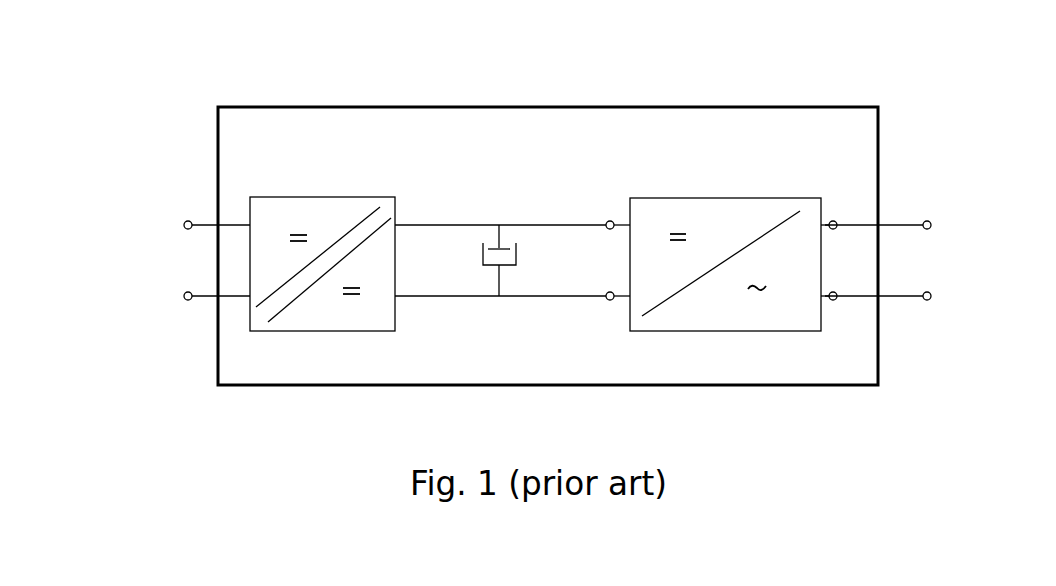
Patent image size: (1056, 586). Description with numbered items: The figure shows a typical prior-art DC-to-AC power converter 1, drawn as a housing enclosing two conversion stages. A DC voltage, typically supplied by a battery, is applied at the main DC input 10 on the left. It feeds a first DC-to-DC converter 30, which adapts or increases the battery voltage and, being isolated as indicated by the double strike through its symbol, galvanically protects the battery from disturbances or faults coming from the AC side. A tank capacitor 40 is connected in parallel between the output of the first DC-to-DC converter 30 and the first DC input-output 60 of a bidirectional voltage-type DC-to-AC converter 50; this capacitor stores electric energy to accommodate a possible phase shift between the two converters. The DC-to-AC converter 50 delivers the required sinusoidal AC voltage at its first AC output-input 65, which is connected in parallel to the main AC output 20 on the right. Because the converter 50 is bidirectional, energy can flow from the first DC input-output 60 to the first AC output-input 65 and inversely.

The DC-to-AC power converter 1 is at (275, 105).
The main DC input 10 is at (181, 232).
The main AC output 20 is at (1024, 257).
The first DC-to-DC converter 30 is at (347, 197).
The tank capacitor 40 is at (479, 260).
The DC-to-AC converter 50 is at (757, 198).
The first DC input-output 60 is at (604, 236).
The first AC output-input 65 is at (836, 260).